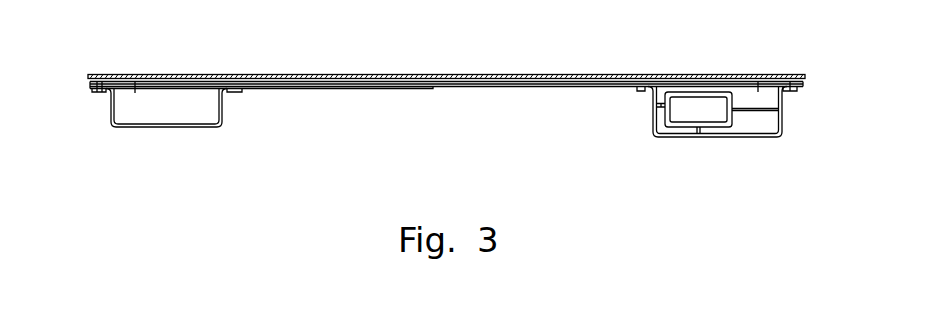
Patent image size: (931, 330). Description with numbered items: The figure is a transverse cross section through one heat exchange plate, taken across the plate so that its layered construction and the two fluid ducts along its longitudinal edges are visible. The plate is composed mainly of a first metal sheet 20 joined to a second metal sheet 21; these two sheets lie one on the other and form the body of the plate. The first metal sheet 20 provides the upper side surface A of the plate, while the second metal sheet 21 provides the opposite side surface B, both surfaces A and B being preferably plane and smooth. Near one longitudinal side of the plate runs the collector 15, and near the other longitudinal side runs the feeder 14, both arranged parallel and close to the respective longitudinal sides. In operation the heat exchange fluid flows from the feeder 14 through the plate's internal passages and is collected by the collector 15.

The first metal sheet 20 is at (297, 72).
The second metal sheet 21 is at (342, 85).
The collector 15 is at (165, 150).
The feeder 14 is at (713, 163).
The side surface A is at (153, 63).
The side surface B is at (492, 93).